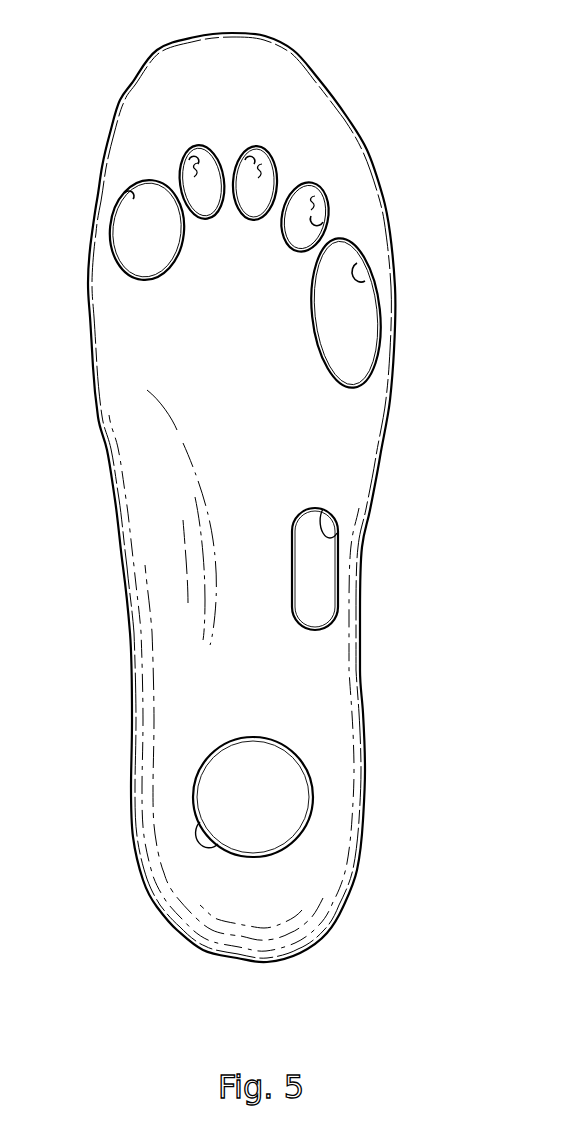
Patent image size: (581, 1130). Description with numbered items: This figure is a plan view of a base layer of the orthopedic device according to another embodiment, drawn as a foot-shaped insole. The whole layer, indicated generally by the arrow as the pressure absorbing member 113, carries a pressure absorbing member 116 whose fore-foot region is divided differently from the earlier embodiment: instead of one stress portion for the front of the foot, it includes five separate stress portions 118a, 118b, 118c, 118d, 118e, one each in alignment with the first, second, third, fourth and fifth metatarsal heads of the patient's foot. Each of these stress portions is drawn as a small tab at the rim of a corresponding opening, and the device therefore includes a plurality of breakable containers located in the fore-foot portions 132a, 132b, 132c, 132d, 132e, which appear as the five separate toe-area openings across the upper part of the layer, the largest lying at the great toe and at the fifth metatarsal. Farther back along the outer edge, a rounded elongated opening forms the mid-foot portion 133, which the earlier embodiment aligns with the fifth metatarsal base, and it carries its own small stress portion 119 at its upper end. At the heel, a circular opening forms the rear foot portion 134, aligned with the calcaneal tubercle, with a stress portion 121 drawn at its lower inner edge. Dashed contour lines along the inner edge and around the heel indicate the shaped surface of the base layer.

The insole insert 113 is at (383, 465).
The pressure absorbing member 116 is at (361, 670).
The stress portion 118a is at (127, 195).
The stress portion 118b is at (190, 156).
The stress portion 118c is at (248, 154).
The stress portion 118d is at (322, 215).
The stress portion 118e is at (357, 266).
The connecting tab 119 is at (327, 512).
The connecting tab 121 is at (200, 822).
The fore-foot portion 132a is at (174, 239).
The fore-foot portion 132b is at (194, 168).
The fore-foot portion 132c is at (264, 170).
The fore-foot portion 132d is at (316, 200).
The fore-foot portion 132e is at (371, 322).
The ball opening 133 is at (334, 577).
The heel opening 134 is at (270, 807).